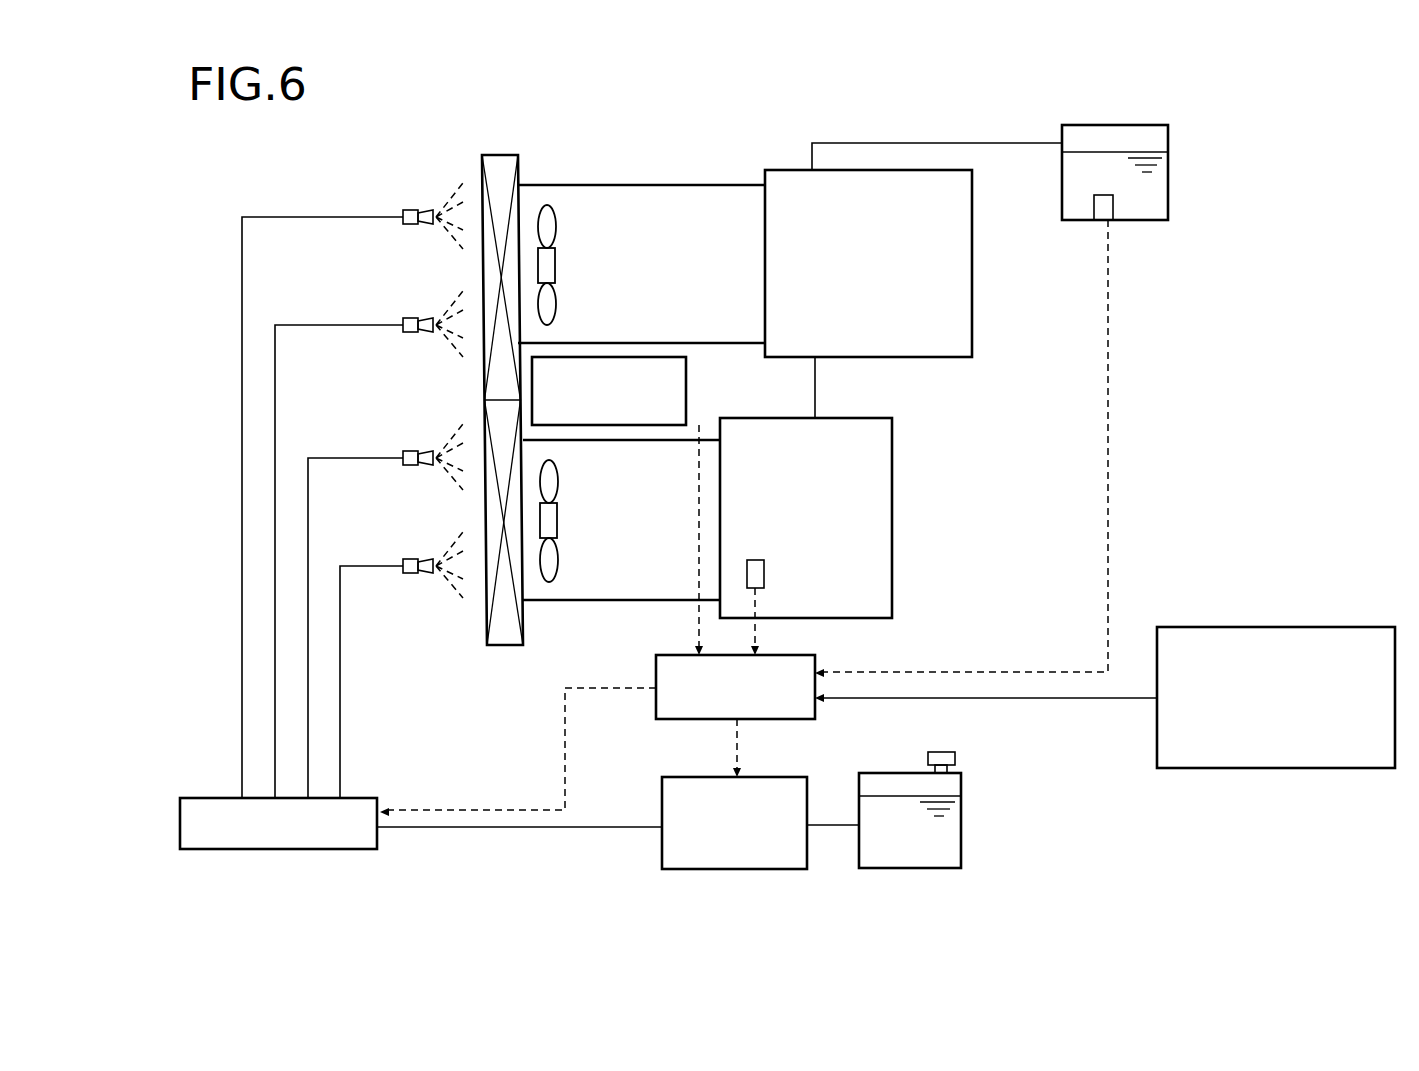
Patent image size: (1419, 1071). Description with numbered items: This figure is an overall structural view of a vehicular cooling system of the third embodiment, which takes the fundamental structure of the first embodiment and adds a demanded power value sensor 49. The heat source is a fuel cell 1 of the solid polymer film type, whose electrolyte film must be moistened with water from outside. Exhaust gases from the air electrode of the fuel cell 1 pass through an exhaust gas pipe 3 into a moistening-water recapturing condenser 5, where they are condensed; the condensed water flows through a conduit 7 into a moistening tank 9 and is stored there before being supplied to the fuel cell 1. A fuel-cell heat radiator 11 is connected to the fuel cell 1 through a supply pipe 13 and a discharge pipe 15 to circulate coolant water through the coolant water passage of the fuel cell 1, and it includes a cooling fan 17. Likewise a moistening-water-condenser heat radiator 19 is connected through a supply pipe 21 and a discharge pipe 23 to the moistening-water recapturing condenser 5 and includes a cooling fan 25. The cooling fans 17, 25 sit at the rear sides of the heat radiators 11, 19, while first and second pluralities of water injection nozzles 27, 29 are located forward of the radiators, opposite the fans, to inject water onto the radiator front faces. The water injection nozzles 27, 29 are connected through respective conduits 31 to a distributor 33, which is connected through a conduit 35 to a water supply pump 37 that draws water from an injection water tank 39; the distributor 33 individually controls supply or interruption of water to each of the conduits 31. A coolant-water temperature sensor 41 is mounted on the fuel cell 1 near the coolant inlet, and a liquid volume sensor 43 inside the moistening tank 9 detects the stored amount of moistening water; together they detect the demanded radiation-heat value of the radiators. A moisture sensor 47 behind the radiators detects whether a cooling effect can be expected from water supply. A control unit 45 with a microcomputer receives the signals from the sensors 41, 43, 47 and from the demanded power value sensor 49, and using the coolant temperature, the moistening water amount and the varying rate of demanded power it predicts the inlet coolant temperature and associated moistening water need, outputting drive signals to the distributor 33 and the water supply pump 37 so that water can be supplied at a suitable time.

The fuel cell 1 is at (892, 460).
The exhaust gas pipe 3 is at (816, 395).
The moistening-water recapturing condenser 5 is at (972, 295).
The conduit 7 is at (873, 143).
The moistening tank 9 is at (1168, 190).
The fuel-cell heat radiator 11 is at (507, 646).
The supply pipe 13 is at (558, 601).
The discharge pipe 15 is at (678, 441).
The cooling fan 17 is at (558, 562).
The moistening-water-condenser heat radiator 19 is at (495, 160).
The supply pipe 21 is at (660, 343).
The discharge pipe 23 is at (660, 185).
The cooling fan 25 is at (556, 226).
The water injection nozzles 27 is at (425, 466).
The water injection nozzles 29 is at (425, 225).
The conduits 31 is at (342, 692).
The distributor 33 is at (300, 849).
The conduit 35 is at (507, 827).
The water supply pump 37 is at (722, 869).
The injection water tank 39 is at (962, 825).
The coolant-water temperature sensor 41 is at (764, 572).
The liquid volume sensor 43 is at (1112, 207).
The control unit 45 is at (770, 719).
The moisture sensor 47 is at (686, 378).
The demanded power value sensor 49 is at (1305, 627).